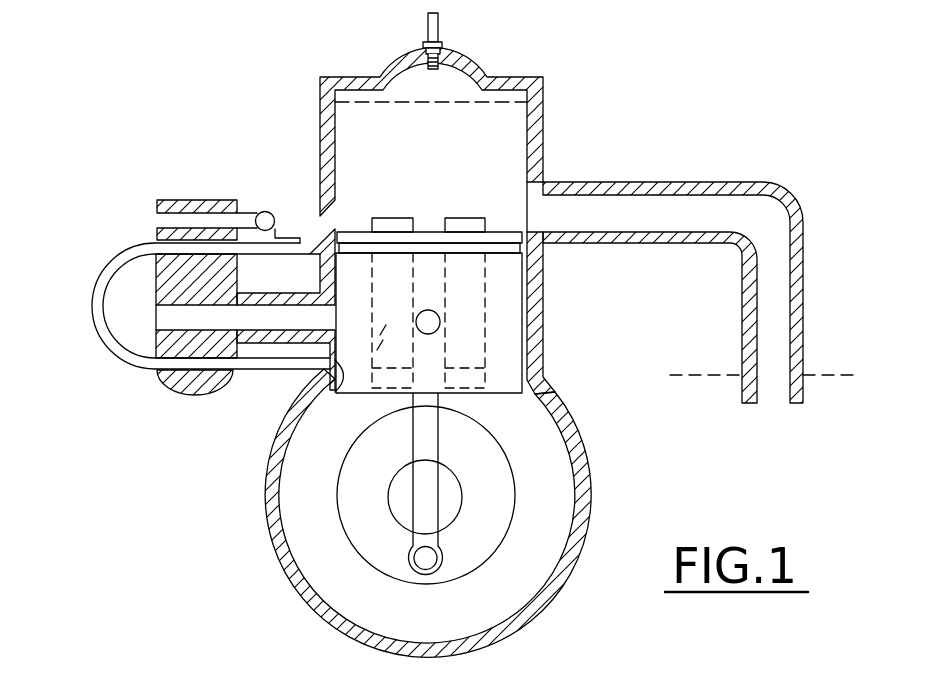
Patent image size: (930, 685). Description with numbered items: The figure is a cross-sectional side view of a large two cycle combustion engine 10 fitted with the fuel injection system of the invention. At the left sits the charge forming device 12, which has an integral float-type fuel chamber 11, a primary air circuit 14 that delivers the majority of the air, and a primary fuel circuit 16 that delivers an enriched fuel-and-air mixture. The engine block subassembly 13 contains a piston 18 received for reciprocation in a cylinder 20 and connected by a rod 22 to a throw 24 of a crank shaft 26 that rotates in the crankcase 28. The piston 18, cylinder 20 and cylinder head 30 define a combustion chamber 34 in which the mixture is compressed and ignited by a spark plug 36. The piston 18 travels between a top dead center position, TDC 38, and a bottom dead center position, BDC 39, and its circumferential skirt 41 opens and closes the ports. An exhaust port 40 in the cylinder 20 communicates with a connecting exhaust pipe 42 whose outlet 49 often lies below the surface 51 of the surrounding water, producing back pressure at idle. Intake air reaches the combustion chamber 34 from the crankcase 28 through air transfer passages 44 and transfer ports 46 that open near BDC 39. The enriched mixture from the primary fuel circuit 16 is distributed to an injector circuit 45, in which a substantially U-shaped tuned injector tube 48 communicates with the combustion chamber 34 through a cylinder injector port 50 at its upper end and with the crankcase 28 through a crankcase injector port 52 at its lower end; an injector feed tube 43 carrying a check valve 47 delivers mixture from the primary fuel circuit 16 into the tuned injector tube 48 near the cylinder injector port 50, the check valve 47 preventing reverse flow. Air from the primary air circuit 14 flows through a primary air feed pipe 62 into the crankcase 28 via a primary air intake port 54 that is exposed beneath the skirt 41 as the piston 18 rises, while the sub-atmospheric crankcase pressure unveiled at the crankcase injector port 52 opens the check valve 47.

The two cycle combustion engine 10 is at (659, 55).
The float-type fuel chamber 11 is at (200, 387).
The charge forming device 12 is at (125, 273).
The engine block subassembly 13 is at (557, 391).
The primary air circuit 14 is at (153, 311).
The primary fuel circuit 16 is at (155, 210).
The piston 18 is at (528, 289).
The cylinder 20 is at (532, 140).
The rod 22 is at (436, 453).
The throw 24 is at (429, 566).
The crank shaft 26 is at (461, 495).
The crankcase 28 is at (297, 541).
The cylinder head 30 is at (470, 60).
The combustion chamber 34 is at (500, 110).
The spark plug 36 is at (440, 24).
The top dead center position (TDC) 38 is at (365, 100).
The bottom dead center position (BDC) 39 is at (347, 227).
The exhaust port 40 is at (532, 213).
The circumferential skirt 41 is at (526, 345).
The connecting exhaust pipe 42 is at (742, 205).
The injector feed tube 43 is at (243, 215).
The air transfer passage 44 is at (350, 398).
The injector circuit 45 is at (280, 219).
The transfer port 46 is at (467, 217).
The check valve 47 is at (272, 212).
The tuned injector tube 48 is at (98, 337).
The exhaust outlet 49 is at (768, 405).
The cylinder injector port 50 is at (343, 230).
The surface of the surrounding body of water 51 is at (832, 358).
The crankcase injector port 52 is at (325, 400).
The primary air intake port 54 is at (323, 328).
The primary air feed pipe 62 is at (260, 312).